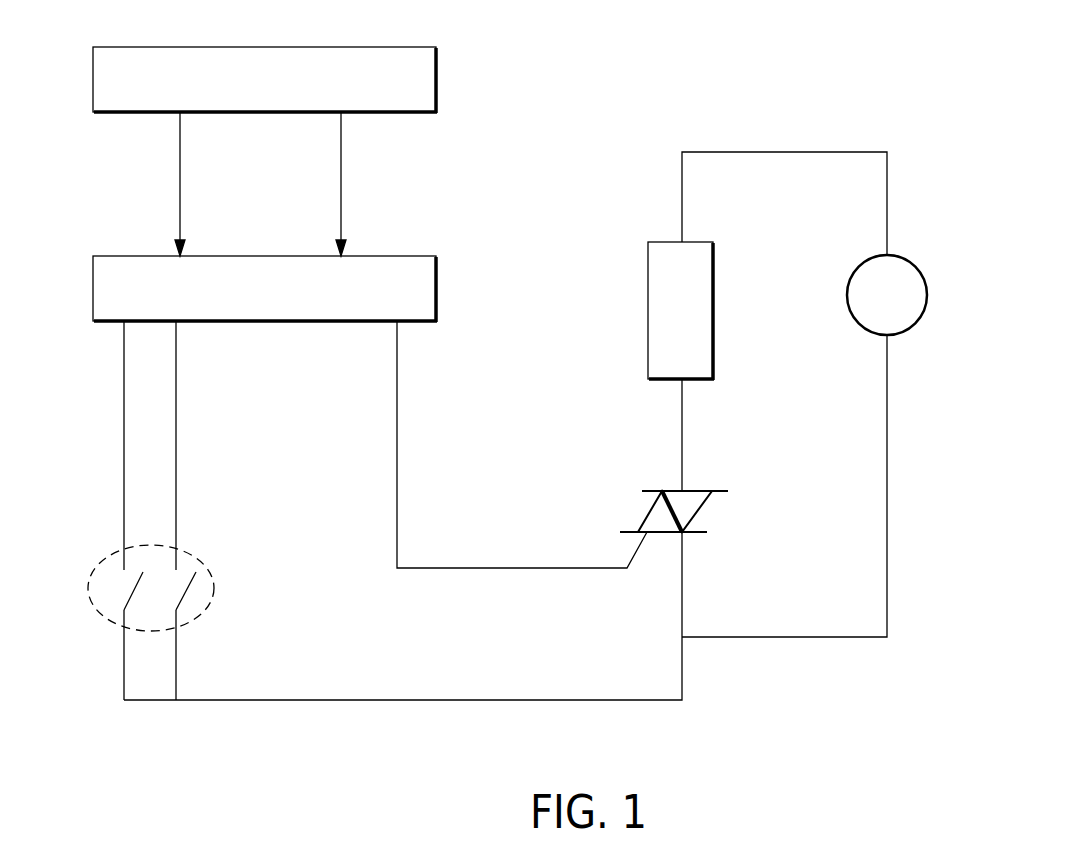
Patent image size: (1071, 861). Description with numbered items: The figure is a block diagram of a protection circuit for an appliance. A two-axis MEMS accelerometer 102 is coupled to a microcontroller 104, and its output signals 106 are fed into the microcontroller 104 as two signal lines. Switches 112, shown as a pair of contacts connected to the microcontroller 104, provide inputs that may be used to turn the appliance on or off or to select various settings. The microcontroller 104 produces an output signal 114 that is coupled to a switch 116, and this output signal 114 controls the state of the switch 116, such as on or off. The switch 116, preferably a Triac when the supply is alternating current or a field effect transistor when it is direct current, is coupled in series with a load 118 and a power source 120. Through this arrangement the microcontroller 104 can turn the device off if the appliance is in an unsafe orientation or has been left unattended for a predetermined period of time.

The two-axis MEMS accelerometer 102 is at (373, 47).
The microcontroller 104 is at (386, 256).
The output signals 106 is at (180, 153).
The switches 112 is at (88, 591).
The output signal 114 is at (397, 527).
The switch 116 is at (720, 491).
The load 118 is at (713, 344).
The power source 120 is at (900, 258).